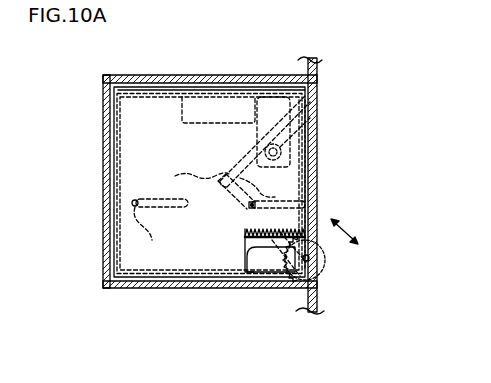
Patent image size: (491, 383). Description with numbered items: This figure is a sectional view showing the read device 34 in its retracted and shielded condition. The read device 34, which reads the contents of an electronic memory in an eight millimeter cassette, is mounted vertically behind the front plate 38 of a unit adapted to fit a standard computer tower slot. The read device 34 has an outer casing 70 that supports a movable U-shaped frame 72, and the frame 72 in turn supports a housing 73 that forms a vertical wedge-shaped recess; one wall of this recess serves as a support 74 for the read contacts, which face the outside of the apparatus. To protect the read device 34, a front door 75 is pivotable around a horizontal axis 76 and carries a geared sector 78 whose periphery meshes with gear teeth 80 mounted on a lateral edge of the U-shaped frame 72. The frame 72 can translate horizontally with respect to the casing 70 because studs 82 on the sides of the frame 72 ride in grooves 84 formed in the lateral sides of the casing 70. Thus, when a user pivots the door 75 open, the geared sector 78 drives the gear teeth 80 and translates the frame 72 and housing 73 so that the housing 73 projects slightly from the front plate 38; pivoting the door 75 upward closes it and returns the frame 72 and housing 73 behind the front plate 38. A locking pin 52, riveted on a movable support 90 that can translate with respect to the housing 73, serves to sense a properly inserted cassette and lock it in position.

The read device 34 is at (100, 200).
The front plate 38 is at (319, 69).
The locking pin 52 is at (305, 142).
The outer casing 70 is at (209, 81).
The U-shaped frame 72 is at (147, 260).
The housing 73 is at (238, 167).
The support 74 is at (310, 112).
The front door 75 is at (317, 183).
The horizontal axis 76 is at (309, 258).
The geared sector 78 is at (291, 289).
The gear teeth 80 is at (245, 229).
The studs 82 is at (242, 216).
The grooves 84 is at (137, 201).
The movable support 90 is at (230, 105).